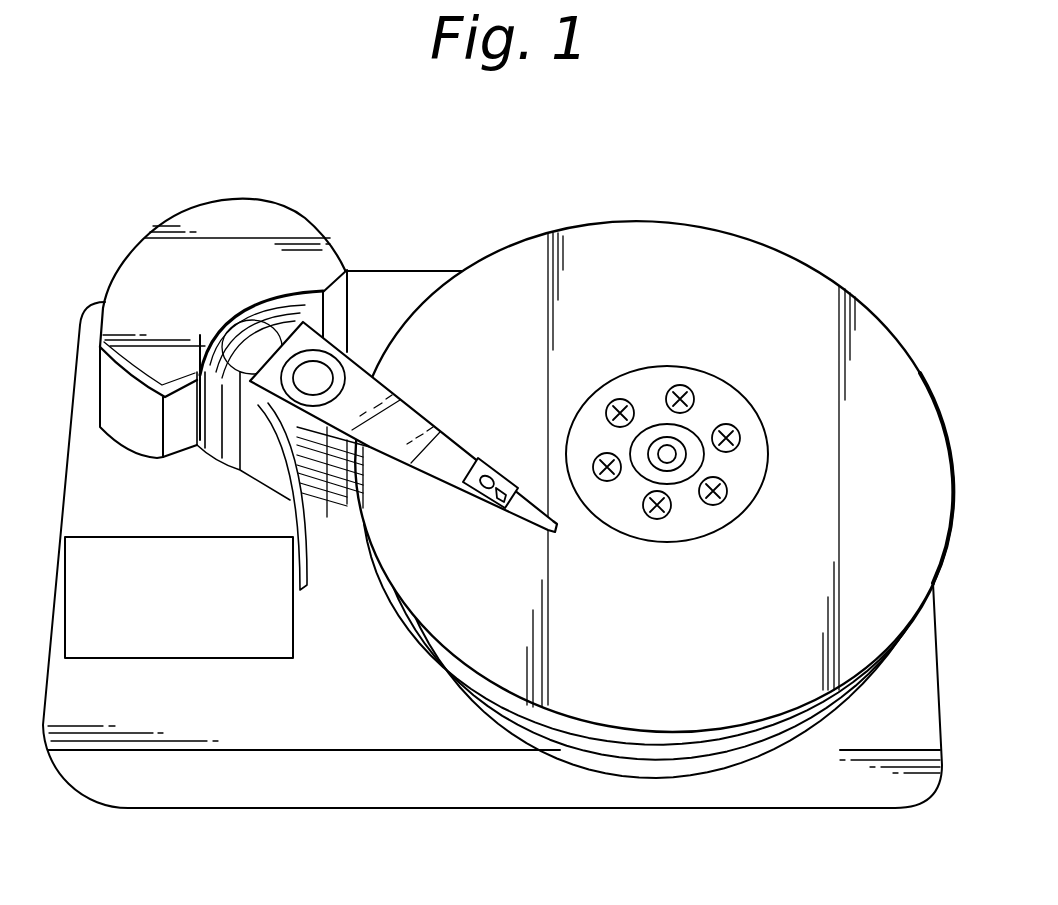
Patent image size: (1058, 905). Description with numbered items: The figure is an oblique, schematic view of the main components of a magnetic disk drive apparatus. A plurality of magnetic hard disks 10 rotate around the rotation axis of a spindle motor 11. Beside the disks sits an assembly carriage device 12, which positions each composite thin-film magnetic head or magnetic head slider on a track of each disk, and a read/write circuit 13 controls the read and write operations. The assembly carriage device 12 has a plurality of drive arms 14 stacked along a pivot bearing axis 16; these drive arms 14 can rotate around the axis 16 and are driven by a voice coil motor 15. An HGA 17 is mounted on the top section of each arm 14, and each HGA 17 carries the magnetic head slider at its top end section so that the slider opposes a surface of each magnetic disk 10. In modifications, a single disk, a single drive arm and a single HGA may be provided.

The magnetic hard disks 10 is at (843, 258).
The spindle motor 11 is at (672, 452).
The assembly carriage device 12 is at (232, 222).
The read/write circuit 13 is at (172, 658).
The drive arms 14 is at (405, 412).
The voice coil motor (VCM) 15 is at (207, 440).
The pivot bearing axis 16 is at (317, 378).
The HGA (head gimbal assembly) 17 is at (517, 506).